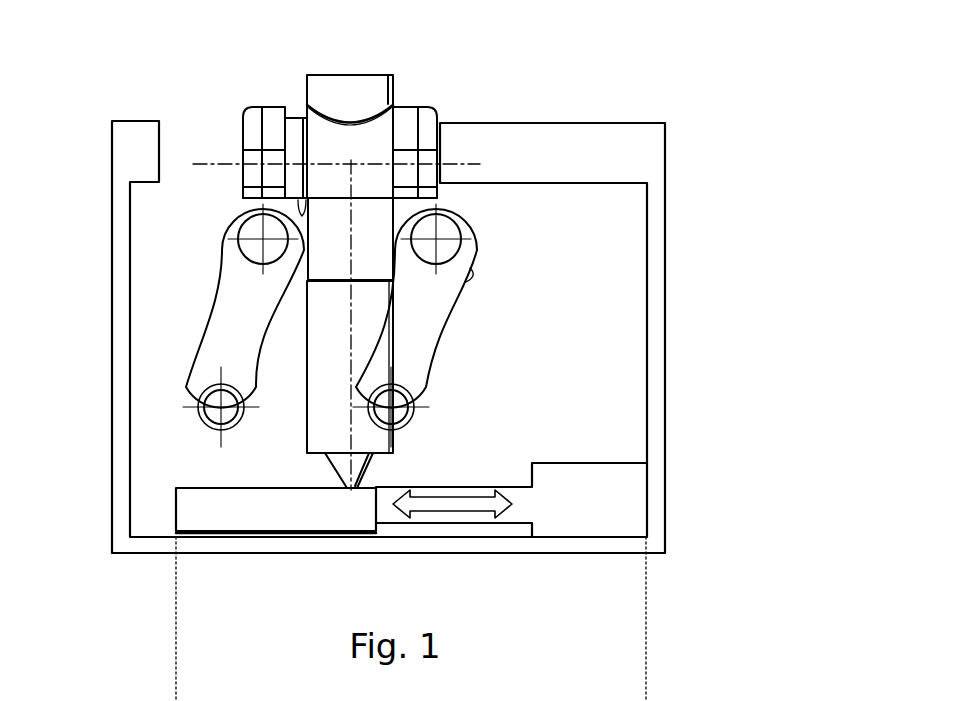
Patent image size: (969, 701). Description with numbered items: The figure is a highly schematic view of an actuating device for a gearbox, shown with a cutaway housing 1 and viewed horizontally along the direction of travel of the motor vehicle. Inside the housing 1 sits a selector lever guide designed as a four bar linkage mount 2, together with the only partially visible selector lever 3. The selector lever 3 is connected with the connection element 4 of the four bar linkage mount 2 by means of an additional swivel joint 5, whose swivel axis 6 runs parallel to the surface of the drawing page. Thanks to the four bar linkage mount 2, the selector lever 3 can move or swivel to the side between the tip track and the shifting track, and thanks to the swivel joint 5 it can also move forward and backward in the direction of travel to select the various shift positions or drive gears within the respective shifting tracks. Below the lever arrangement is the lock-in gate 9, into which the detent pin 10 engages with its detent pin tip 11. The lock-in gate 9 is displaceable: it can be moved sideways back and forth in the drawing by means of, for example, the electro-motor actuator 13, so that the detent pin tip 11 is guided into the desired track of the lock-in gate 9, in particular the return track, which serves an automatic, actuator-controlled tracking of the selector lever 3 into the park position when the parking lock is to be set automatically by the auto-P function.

The housing 1 is at (636, 152).
The four bar linkage mount 2 is at (468, 340).
The selector lever 3 is at (355, 89).
The connection element 4 is at (345, 239).
The swivel joint 5 is at (242, 72).
The swivel axis 6 is at (218, 163).
The lock-in gate 9 is at (209, 509).
The detent pin 10 is at (328, 330).
The detent pin tip 11 is at (339, 469).
The electro-motor actuator 13 is at (593, 499).